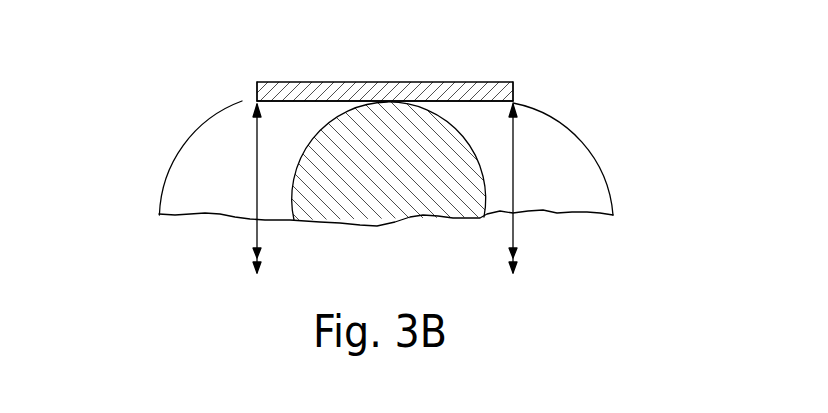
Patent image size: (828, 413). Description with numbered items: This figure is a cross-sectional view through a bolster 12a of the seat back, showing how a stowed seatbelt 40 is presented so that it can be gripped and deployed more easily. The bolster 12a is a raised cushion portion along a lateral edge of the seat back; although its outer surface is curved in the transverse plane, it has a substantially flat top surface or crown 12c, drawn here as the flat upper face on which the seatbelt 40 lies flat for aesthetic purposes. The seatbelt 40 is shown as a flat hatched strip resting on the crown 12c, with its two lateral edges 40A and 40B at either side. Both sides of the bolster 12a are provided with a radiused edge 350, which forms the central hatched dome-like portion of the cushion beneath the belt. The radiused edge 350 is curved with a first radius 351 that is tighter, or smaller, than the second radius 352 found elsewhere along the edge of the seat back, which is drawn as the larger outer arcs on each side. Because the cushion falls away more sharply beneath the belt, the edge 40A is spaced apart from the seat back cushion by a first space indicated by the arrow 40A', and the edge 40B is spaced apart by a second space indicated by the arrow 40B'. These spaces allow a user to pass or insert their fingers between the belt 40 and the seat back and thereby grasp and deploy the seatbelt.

The seatbelt 40 is at (487, 82).
The edge of the seatbelt 40A is at (575, 67).
The edge of the seatbelt 40B is at (197, 68).
The arrow indicating first space 40A' is at (570, 188).
The arrow indicating second space 40B' is at (203, 188).
The radiused edge 350 is at (338, 143).
The first radius 351 is at (305, 153).
The second radius 352 is at (179, 152).
The bolster 12a is at (212, 195).
The crown 12c is at (488, 102).